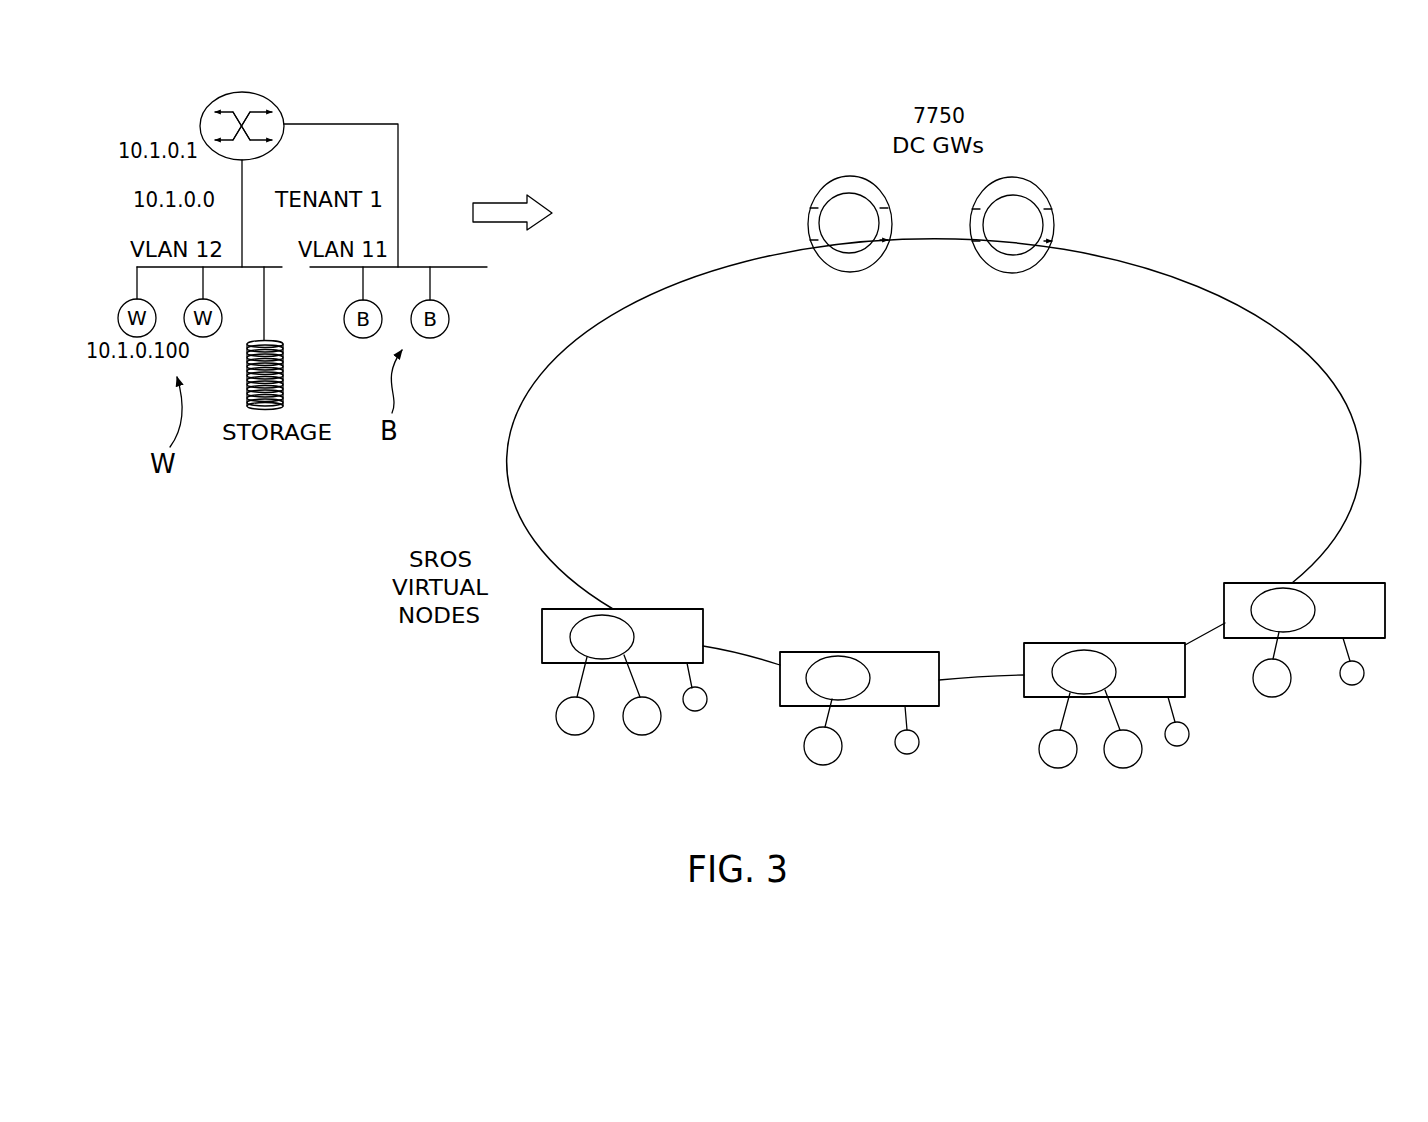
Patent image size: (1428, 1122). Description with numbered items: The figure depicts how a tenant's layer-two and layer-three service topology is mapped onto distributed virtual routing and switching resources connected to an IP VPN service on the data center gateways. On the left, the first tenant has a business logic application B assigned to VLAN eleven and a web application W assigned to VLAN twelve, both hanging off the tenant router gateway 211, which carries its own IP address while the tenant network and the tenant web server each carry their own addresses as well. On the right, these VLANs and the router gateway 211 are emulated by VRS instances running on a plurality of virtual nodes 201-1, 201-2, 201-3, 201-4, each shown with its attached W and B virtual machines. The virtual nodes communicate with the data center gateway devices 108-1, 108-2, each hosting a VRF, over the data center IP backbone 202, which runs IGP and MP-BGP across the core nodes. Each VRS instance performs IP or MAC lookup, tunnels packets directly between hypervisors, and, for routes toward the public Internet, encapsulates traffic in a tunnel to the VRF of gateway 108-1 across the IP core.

The Tenant 1 Router GW 211 is at (272, 93).
The data center gateway device (VRF) 108-1 is at (840, 175).
The data center gateway device (VRF) 108-2 is at (1033, 182).
The data center IP backbone 202 is at (1123, 272).
The virtual node 201-1 is at (703, 653).
The virtual node 201-2 is at (931, 707).
The virtual node 201-3 is at (1185, 690).
The virtual node 201-4 is at (1370, 639).